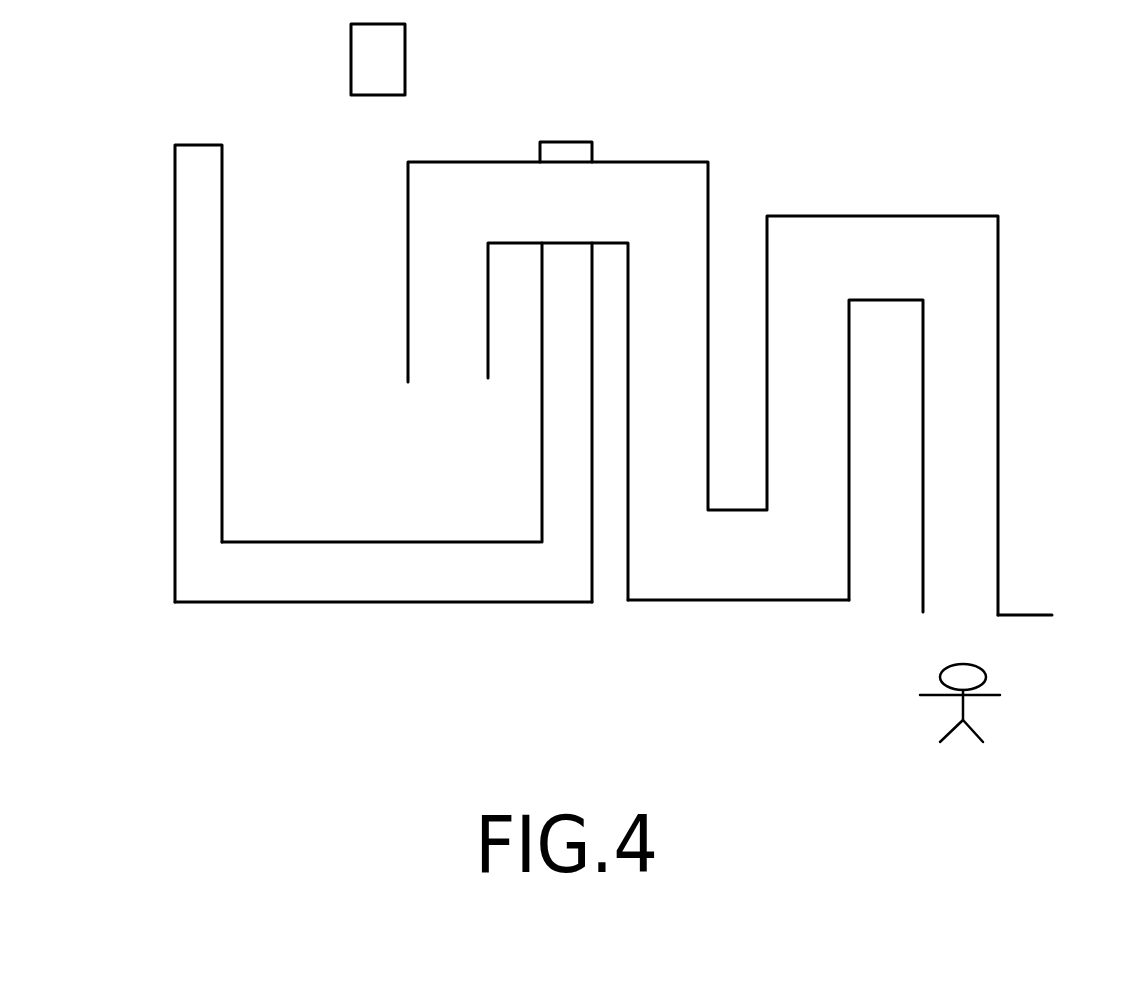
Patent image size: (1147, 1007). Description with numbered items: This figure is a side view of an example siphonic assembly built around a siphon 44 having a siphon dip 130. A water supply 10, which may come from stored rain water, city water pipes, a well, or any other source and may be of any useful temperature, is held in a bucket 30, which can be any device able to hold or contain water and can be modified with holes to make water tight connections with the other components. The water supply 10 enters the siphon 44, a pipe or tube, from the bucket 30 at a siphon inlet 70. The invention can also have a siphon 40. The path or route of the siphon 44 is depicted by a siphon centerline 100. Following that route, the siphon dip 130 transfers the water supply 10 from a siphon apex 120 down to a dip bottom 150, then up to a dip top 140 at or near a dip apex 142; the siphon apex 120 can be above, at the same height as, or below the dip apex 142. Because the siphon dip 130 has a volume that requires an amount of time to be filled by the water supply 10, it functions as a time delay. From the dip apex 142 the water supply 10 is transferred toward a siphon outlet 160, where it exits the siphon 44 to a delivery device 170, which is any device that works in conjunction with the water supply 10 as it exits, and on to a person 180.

The water supply 10 is at (351, 62).
The bucket 30 is at (195, 228).
The siphon 40 is at (445, 302).
The siphon 44 is at (447, 162).
The siphon inlet 70 is at (447, 383).
The siphon centerline 100 is at (510, 204).
The siphon apex 120 is at (550, 202).
The siphon dip 130 is at (795, 552).
The dip top 140 is at (840, 216).
The dip apex 142 is at (881, 423).
The dip bottom 150 is at (720, 600).
The siphon outlet 160 is at (1063, 617).
The delivery device 170 is at (960, 638).
The person 180 is at (985, 669).